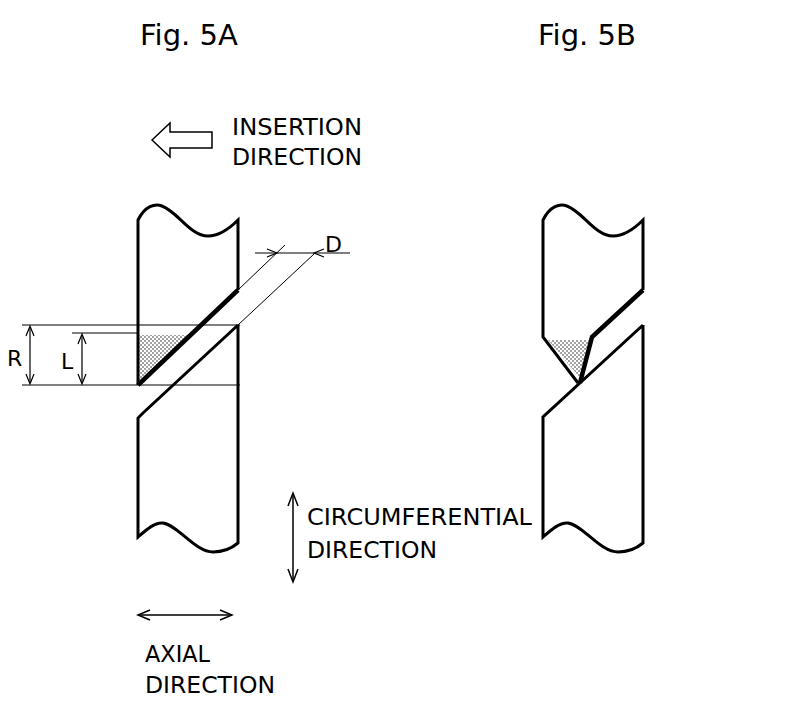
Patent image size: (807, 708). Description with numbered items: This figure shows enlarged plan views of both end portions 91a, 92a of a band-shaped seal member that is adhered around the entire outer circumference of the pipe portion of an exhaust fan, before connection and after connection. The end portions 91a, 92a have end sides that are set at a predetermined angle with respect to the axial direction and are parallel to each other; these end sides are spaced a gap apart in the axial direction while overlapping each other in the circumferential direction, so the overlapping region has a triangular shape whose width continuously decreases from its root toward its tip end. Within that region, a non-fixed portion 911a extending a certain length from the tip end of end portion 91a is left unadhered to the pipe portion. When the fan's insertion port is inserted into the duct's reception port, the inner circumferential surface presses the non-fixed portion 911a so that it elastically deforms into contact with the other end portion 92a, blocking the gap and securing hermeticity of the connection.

In FIG. 5A, the end portion 91a is at (127, 278).
In FIG. 5B, the end portion 91a is at (533, 262).
In FIG. 5A, the other end portion 92a is at (263, 367).
In FIG. 5B, the other end portion 92a is at (667, 430).
In FIG. 5A, the non-fixed portion 911a is at (148, 354).
In FIG. 5B, the non-fixed portion 911a is at (562, 357).